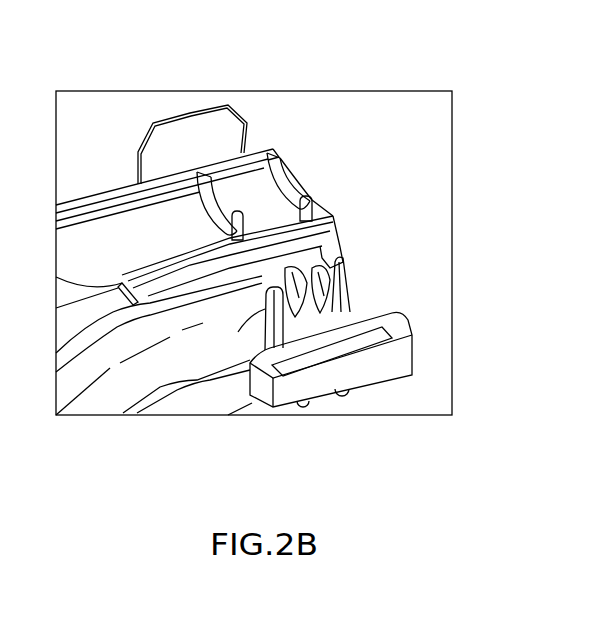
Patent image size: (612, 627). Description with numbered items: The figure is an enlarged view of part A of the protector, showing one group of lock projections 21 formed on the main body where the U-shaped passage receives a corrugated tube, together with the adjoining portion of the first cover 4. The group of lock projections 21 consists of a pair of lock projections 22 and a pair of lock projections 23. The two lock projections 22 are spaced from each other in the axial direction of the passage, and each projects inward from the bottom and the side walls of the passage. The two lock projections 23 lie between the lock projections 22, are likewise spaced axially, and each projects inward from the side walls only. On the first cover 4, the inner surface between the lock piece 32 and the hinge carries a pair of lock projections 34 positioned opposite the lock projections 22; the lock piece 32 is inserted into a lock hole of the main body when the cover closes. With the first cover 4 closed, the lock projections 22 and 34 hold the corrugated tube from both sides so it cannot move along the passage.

The part A is at (403, 91).
The first cover 4 is at (97, 190).
The group of lock projections 21 is at (413, 250).
The lock projections 22 is at (343, 262).
The lock projections 23 is at (345, 280).
The lock piece 32 is at (192, 113).
The lock projections 34 is at (203, 174).